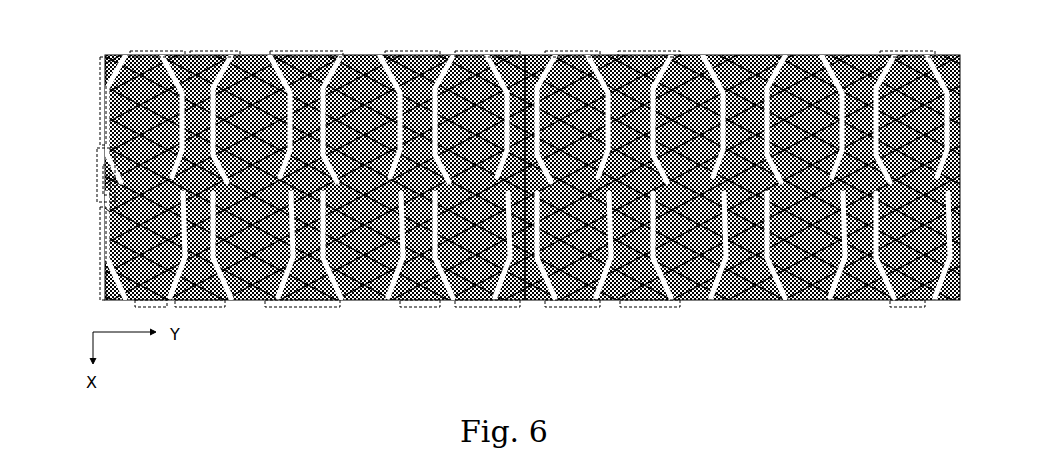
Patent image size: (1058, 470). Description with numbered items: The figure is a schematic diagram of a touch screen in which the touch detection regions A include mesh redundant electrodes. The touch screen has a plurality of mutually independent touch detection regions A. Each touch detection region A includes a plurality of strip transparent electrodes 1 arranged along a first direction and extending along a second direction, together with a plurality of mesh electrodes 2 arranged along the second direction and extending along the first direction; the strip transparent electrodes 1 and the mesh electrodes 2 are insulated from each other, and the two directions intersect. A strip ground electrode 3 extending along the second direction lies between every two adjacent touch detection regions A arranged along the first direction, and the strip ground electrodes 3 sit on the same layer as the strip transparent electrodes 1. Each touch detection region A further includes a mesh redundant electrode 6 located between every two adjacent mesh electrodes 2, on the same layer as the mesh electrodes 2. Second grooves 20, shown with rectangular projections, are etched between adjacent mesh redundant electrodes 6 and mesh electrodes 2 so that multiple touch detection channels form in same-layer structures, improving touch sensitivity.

The strip transparent electrode 1 is at (195, 53).
The mesh electrode 2 is at (100, 100).
The strip ground electrode 3 is at (145, 53).
The mesh redundant electrode 6 is at (103, 188).
The second groove 20 is at (97, 152).
The touch detection region A is at (105, 209).